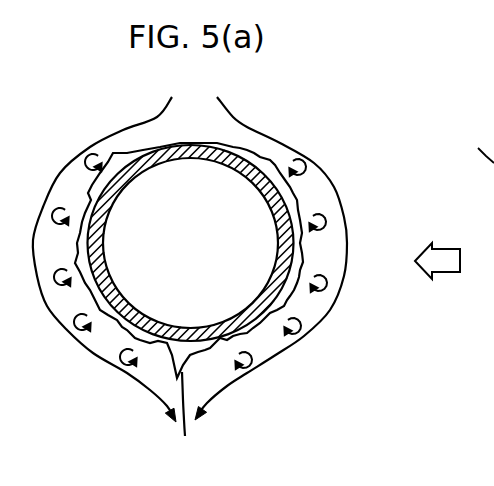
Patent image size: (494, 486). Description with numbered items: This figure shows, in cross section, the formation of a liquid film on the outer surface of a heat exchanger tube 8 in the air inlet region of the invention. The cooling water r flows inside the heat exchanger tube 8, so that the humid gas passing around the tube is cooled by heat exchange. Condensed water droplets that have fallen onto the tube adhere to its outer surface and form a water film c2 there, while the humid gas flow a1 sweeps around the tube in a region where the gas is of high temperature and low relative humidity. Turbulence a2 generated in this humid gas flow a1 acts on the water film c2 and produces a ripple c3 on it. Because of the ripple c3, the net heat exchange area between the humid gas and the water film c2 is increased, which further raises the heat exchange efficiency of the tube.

The heat exchanger tube 8 is at (190, 143).
The cooling water r is at (244, 255).
The humid gas flow a1 is at (312, 163).
The turbulence a2 is at (320, 218).
The water film c2 is at (215, 347).
The ripple c3 is at (188, 415).